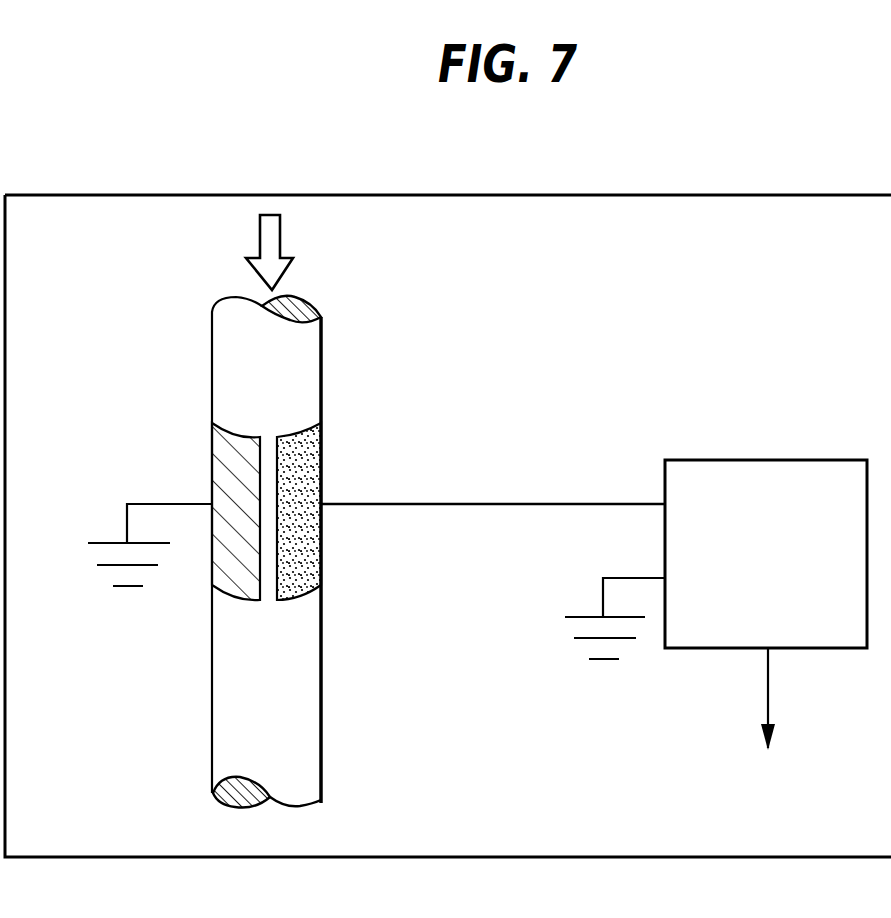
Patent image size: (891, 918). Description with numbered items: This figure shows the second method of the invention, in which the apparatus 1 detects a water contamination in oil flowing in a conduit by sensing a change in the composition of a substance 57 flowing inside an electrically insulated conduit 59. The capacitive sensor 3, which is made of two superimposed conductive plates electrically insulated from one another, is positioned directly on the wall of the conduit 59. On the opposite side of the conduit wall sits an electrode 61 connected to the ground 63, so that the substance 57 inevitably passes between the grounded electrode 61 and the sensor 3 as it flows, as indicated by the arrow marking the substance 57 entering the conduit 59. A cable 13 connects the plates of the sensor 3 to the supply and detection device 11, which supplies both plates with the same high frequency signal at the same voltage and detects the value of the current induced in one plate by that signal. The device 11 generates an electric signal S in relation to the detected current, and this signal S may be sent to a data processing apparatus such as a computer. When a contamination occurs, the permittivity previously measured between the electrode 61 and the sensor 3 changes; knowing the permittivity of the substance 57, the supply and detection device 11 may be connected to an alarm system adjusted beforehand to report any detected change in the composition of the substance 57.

The apparatus 1 is at (490, 460).
The capacitive sensor 3 is at (325, 567).
The supply and detection device 11 is at (777, 425).
The cable 13 is at (435, 503).
The substance 57 is at (245, 252).
The electrically insulated conduit 59 is at (326, 689).
The electrode 61 is at (213, 440).
The ground 63 is at (148, 503).
The electric signal S is at (768, 698).